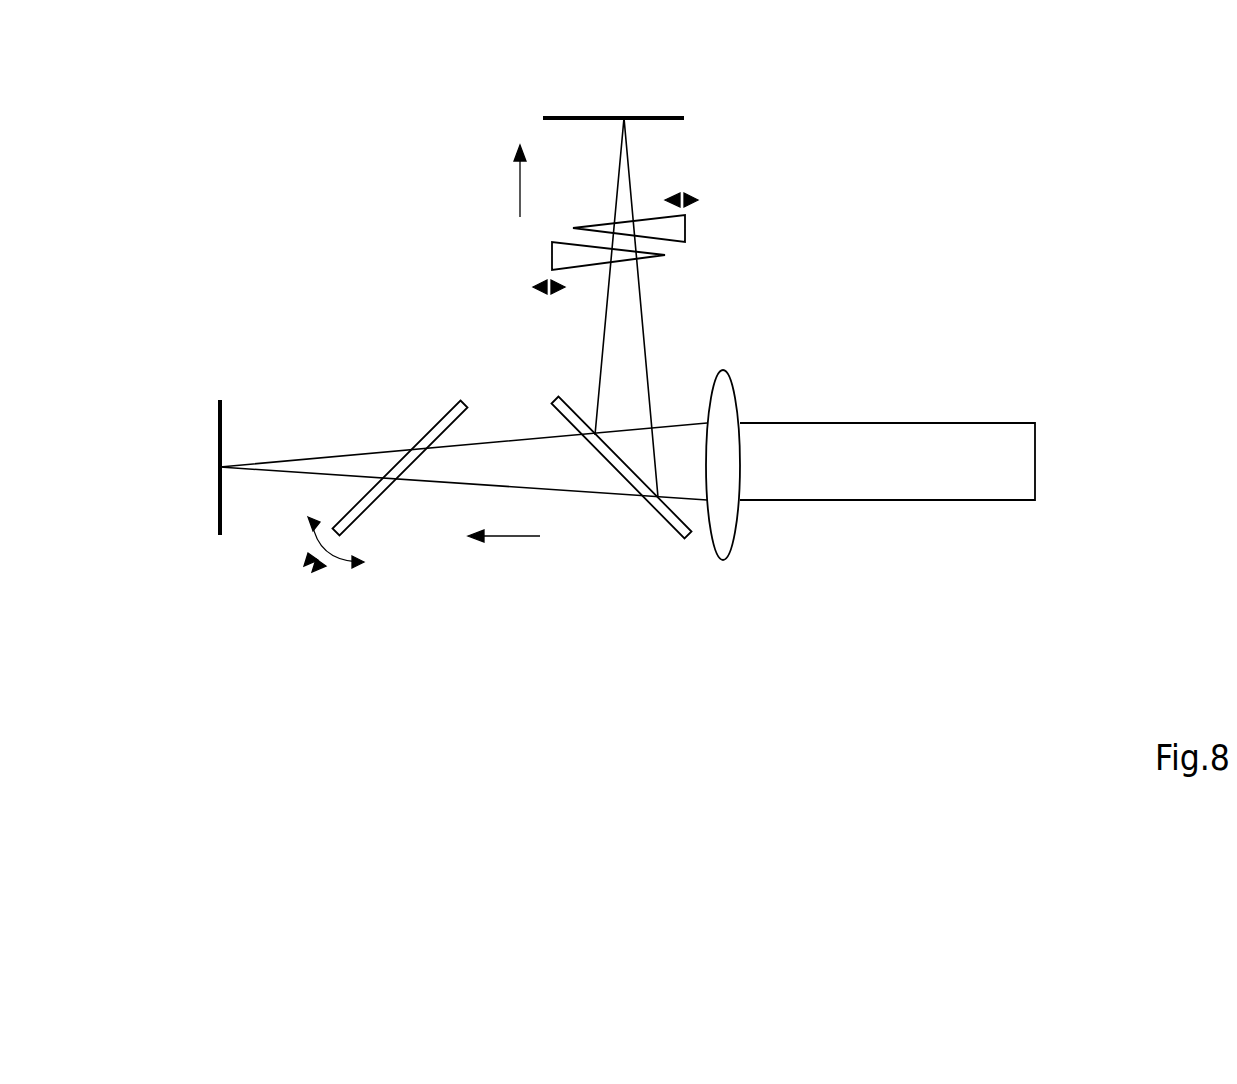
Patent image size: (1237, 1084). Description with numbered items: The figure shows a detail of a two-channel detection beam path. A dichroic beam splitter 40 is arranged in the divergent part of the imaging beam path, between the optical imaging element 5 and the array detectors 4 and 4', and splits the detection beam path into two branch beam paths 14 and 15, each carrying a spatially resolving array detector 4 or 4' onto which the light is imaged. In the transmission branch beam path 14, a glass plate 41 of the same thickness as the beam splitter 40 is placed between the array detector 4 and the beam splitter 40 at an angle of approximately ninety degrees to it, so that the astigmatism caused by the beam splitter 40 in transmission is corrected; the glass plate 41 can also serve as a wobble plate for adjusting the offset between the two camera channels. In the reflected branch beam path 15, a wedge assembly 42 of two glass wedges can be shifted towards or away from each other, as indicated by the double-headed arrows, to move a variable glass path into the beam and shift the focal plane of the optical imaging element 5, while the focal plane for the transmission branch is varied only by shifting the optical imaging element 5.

The spatially resolving array detector 4 is at (203, 417).
The spatially resolving array detector 4' is at (630, 80).
The optical imaging element 5 is at (728, 532).
The branch beam path 14 is at (504, 553).
The branch beam path 15 is at (502, 181).
The dichroic beam splitter 40 is at (447, 418).
The glass plate 41 is at (670, 527).
The wedge assembly 42 is at (705, 193).